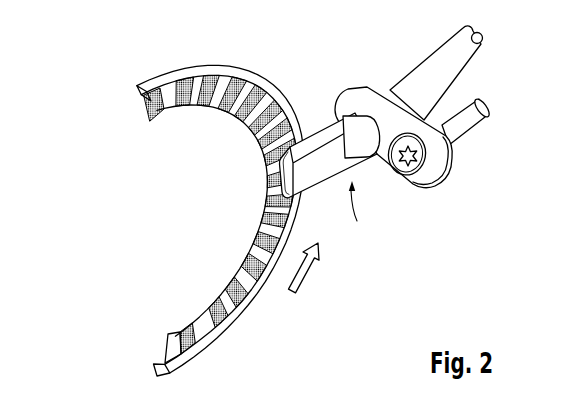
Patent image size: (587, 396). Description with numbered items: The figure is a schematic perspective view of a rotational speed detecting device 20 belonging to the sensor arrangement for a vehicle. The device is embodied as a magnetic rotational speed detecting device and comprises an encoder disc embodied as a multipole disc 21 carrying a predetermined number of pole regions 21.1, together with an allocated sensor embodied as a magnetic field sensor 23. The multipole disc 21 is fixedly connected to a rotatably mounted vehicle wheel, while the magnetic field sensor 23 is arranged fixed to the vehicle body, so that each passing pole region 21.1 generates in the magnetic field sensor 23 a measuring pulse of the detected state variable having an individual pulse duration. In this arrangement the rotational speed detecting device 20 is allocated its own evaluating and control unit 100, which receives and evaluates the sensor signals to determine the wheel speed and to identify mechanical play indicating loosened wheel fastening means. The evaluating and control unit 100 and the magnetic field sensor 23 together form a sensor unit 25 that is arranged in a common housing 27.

The rotational speed detecting device 20 is at (93, 52).
The multipole disc 21 is at (163, 78).
The pole regions 21.1 is at (183, 107).
The magnetic field sensor 23 is at (312, 147).
The sensor unit 25 is at (354, 212).
The common housing 27 is at (370, 89).
The evaluating and control unit 100 is at (362, 145).